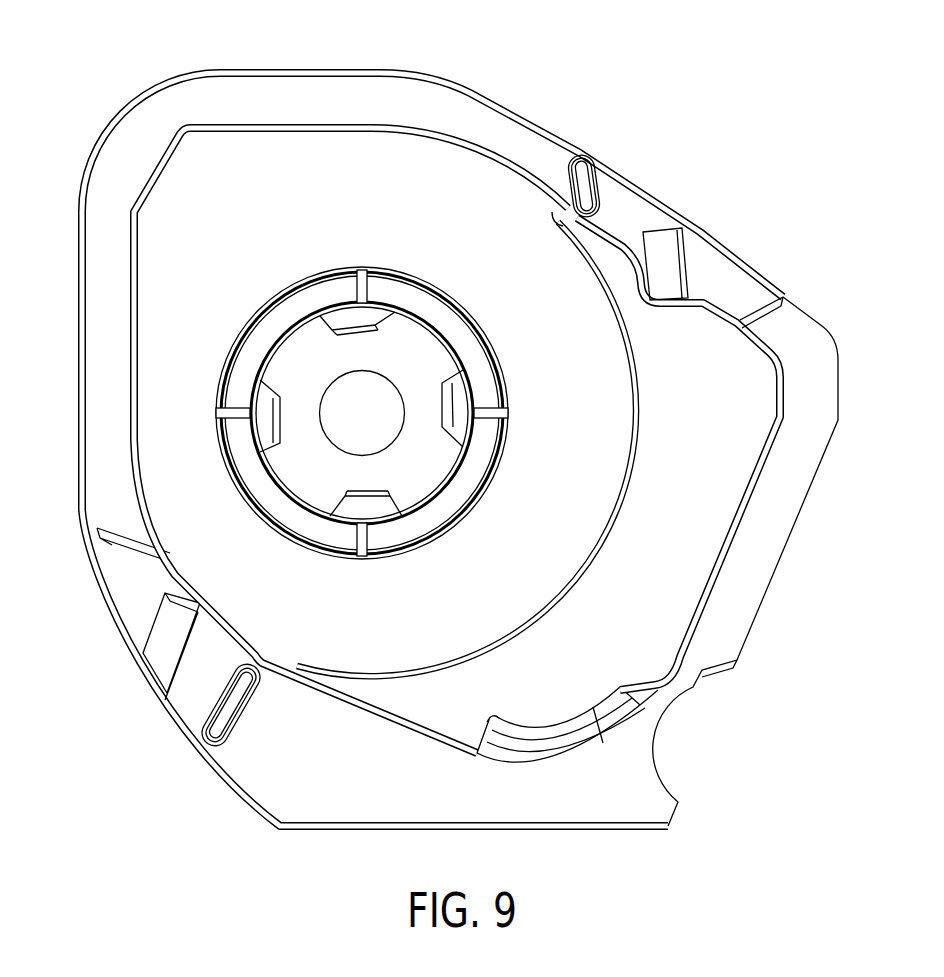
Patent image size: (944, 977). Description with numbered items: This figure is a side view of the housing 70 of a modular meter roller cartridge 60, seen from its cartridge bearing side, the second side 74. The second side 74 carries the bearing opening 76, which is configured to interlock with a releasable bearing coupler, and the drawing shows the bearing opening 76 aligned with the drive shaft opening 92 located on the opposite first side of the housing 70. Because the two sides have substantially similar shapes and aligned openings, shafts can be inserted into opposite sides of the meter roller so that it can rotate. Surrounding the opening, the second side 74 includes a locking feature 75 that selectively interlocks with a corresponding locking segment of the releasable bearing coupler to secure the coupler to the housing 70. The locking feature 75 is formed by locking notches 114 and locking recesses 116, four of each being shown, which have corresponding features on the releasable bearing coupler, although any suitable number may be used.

The modular meter roller cartridge 60 is at (662, 121).
The housing 70 is at (720, 277).
The second side 74 is at (257, 163).
The locking feature 75 is at (372, 403).
The bearing opening 76 is at (295, 368).
The drive shaft opening 92 is at (367, 433).
The locking notches 114 is at (338, 316).
The locking recesses 116 is at (430, 320).